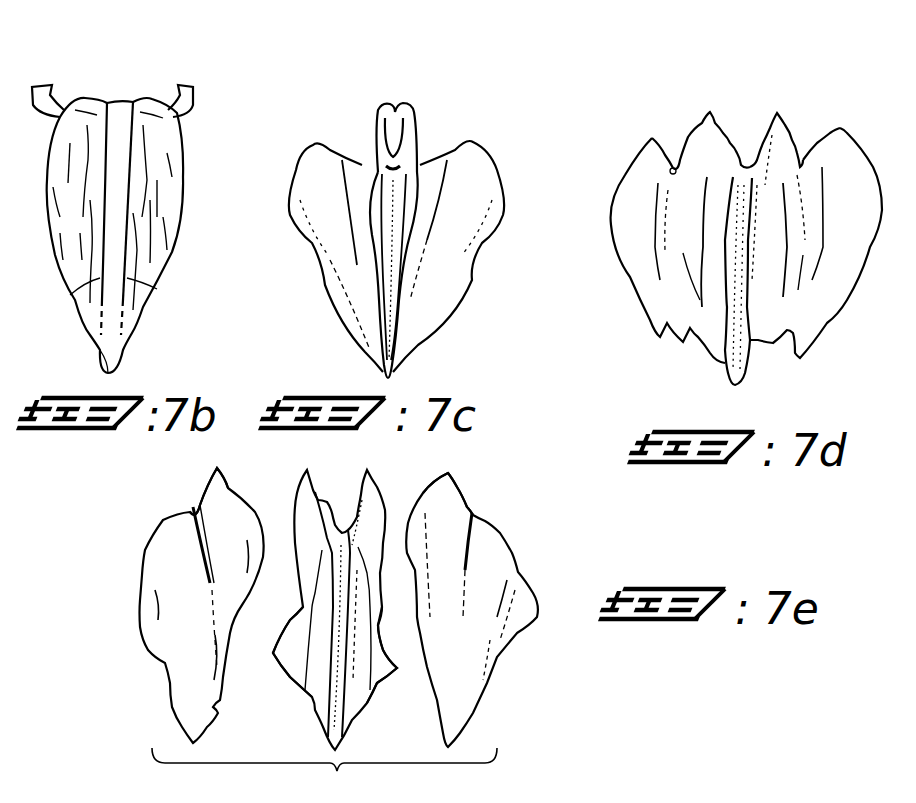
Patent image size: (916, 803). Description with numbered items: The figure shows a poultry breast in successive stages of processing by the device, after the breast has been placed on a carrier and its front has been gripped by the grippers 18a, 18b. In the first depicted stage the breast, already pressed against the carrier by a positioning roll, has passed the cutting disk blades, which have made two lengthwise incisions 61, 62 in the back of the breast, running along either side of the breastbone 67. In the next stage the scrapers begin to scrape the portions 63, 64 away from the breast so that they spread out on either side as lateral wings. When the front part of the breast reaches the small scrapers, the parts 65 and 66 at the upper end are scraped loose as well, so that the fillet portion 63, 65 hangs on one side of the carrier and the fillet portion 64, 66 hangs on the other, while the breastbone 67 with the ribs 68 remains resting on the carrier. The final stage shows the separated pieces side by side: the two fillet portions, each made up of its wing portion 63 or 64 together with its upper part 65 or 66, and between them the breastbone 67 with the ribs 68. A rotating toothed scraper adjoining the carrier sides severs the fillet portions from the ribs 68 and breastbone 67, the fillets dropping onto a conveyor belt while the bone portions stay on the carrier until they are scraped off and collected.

In FIG. 7B, the gripper 18a is at (190, 83).
In FIG. 7B, the gripper 18b is at (38, 85).
In FIG. 7B, the lengthwise incision 61 is at (157, 289).
In FIG. 7B, the lengthwise incision 62 is at (70, 295).
In FIG. 7C, the fillet portion 63 is at (353, 293).
In FIG. 7D, the fillet portion 63 is at (652, 273).
In FIG. 7E, the fillet portion 63 is at (180, 653).
In FIG. 7C, the fillet portion 64 is at (447, 280).
In FIG. 7D, the fillet portion 64 is at (830, 280).
In FIG. 7E, the fillet portion 64 is at (490, 660).
In FIG. 7B, the fillet part 65 is at (83, 120).
In FIG. 7D, the fillet part 65 is at (700, 125).
In FIG. 7E, the fillet part 65 is at (217, 490).
In FIG. 7B, the fillet part 66 is at (150, 108).
In FIG. 7D, the fillet part 66 is at (785, 130).
In FIG. 7E, the fillet part 66 is at (450, 495).
In FIG. 7B, the breastbone 67 is at (110, 345).
In FIG. 7C, the breastbone 67 is at (392, 312).
In FIG. 7D, the breastbone 67 is at (748, 330).
In FIG. 7E, the breastbone 67 is at (340, 688).
In FIG. 7E, the ribs 68 is at (307, 670).